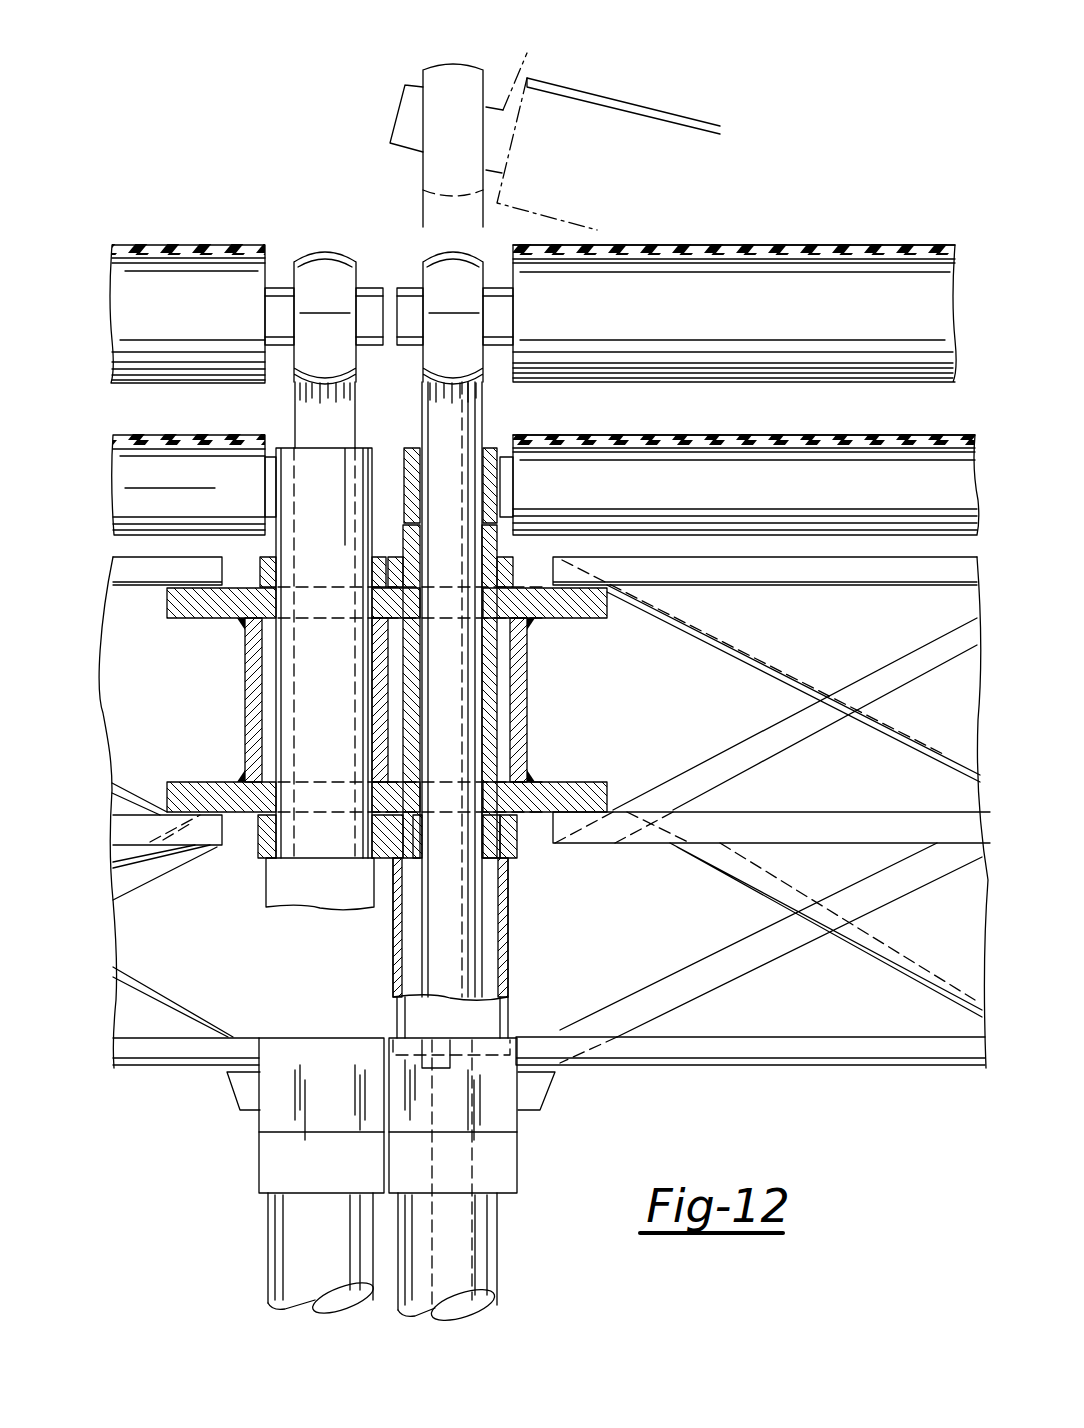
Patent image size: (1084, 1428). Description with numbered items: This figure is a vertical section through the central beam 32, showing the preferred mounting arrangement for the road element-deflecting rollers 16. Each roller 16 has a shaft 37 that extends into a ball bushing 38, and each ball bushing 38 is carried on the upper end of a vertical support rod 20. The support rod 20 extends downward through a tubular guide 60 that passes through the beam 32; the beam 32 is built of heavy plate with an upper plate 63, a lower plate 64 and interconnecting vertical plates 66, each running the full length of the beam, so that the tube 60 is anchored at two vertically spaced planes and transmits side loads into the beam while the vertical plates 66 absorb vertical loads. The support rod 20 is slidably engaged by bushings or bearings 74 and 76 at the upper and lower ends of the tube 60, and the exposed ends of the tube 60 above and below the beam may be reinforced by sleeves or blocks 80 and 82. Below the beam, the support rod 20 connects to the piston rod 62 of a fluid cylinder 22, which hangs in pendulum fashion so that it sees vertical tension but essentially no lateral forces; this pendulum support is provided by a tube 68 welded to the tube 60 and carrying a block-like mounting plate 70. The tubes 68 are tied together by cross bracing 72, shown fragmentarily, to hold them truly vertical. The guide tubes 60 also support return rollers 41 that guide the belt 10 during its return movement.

The belt 10 is at (745, 243).
The road element-deflecting roller 16 is at (653, 135).
The vertical support rod 20 is at (483, 408).
The fluid cylinder 22 is at (515, 1170).
The central beam 32 is at (605, 785).
The shaft 37 is at (281, 298).
The ball bushing 38 is at (445, 67).
The return roller 41 is at (170, 500).
The tubular guide 60 is at (330, 465).
The piston rod 62 is at (478, 1228).
The upper plate 63 is at (200, 620).
The lower plate 64 is at (188, 783).
The vertical plate 66 is at (245, 709).
The tube 68 is at (510, 932).
The block-like mounting plate 70 is at (510, 1090).
The cross bracing 72 is at (724, 975).
The upper bushing 74 is at (500, 480).
The lower bushing 76 is at (515, 860).
The upper reinforcing block 80 is at (522, 558).
The lower reinforcing block 82 is at (262, 858).